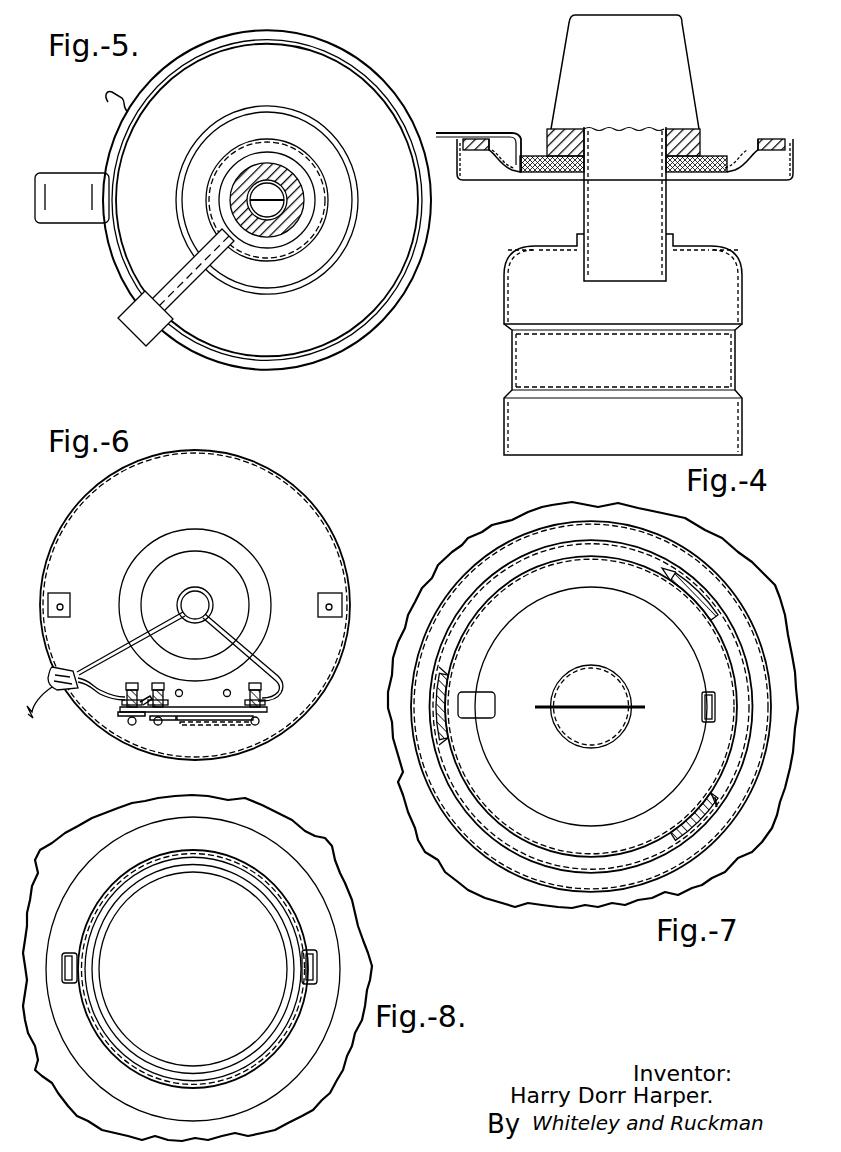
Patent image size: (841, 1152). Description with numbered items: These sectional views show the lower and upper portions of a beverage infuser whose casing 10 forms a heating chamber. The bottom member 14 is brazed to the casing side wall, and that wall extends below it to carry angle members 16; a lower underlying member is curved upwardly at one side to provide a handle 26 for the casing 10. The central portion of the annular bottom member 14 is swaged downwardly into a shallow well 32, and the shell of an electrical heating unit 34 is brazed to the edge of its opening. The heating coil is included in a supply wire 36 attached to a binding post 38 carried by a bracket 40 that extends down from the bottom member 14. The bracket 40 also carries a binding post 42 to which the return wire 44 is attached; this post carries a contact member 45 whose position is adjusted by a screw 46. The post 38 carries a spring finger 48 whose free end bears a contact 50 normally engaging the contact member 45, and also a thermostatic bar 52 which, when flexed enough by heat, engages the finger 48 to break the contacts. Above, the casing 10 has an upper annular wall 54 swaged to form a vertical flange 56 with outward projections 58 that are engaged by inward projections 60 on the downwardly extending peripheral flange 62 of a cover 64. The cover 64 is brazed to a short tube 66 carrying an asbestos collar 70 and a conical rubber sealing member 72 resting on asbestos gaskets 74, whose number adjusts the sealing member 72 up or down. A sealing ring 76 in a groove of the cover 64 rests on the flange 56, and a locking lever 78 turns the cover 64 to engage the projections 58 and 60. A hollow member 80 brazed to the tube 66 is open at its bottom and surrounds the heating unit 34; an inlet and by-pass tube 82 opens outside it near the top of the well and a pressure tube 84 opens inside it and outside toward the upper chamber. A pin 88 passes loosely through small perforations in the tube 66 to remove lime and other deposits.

In FIG. 5, the casing 10 is at (403, 106).
In FIG. 6, the casing 10 is at (336, 535).
In FIG. 7, the casing 10 is at (528, 882).
In FIG. 8, the bottom member 14 is at (295, 1105).
In FIG. 6, the angle members 16 is at (65, 593).
In FIG. 5, the handle 26 is at (58, 185).
In FIG. 8, the shallow well 32 is at (328, 985).
In FIG. 8, the electrical heating unit 34 is at (227, 881).
In FIG. 6, the supply wire 36 is at (98, 660).
In FIG. 6, the binding post 38 is at (268, 703).
In FIG. 6, the bracket 40 is at (130, 677).
In FIG. 6, the binding post 42 is at (125, 708).
In FIG. 6, the return wire 44 is at (127, 700).
In FIG. 6, the contact member 45 is at (150, 720).
In FIG. 6, the screw 46 is at (158, 687).
In FIG. 6, the spring finger 48 is at (196, 727).
In FIG. 6, the contact 50 is at (163, 726).
In FIG. 6, the thermostatic bar 52 is at (212, 723).
In FIG. 5, the upper annular wall 54 is at (360, 90).
In FIG. 7, the vertical flange 56 is at (708, 618).
In FIG. 7, the outward projections 58 is at (687, 582).
In FIG. 7, the inward projections 60 is at (638, 552).
In FIG. 4, the peripheral flange 62 is at (468, 174).
In FIG. 7, the peripheral flange 62 is at (460, 602).
In FIG. 5, the cover 64 is at (253, 253).
In FIG. 4, the cover 64 is at (739, 160).
In FIG. 5, the short tube 66 is at (298, 184).
In FIG. 4, the short tube 66 is at (667, 211).
In FIG. 7, the short tube 66 is at (567, 668).
In FIG. 4, the asbestos collar 70 is at (662, 145).
In FIG. 5, the conical rubber sealing member 72 is at (263, 165).
In FIG. 4, the conical rubber sealing member 72 is at (555, 129).
In FIG. 4, the asbestos gaskets 74 is at (515, 174).
In FIG. 4, the sealing ring 76 is at (787, 178).
In FIG. 5, the locking lever 78 is at (147, 330).
In FIG. 4, the locking lever 78 is at (473, 133).
In FIG. 4, the hollow member 80 is at (743, 305).
In FIG. 7, the hollow member 80 is at (587, 823).
In FIG. 8, the hollow member 80 is at (285, 893).
In FIG. 7, the inlet and by-pass tube 82 is at (487, 695).
In FIG. 8, the inlet and by-pass tube 82 is at (70, 985).
In FIG. 7, the pressure tube 84 is at (702, 697).
In FIG. 8, the pressure tube 84 is at (317, 960).
In FIG. 5, the pin 88 is at (293, 220).
In FIG. 7, the pin 88 is at (595, 712).